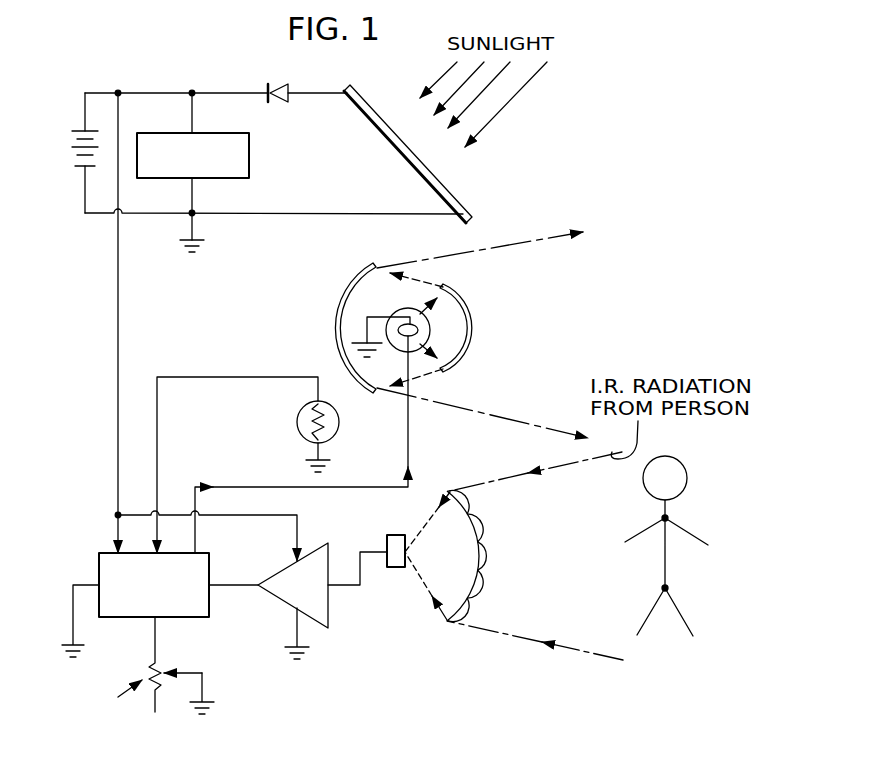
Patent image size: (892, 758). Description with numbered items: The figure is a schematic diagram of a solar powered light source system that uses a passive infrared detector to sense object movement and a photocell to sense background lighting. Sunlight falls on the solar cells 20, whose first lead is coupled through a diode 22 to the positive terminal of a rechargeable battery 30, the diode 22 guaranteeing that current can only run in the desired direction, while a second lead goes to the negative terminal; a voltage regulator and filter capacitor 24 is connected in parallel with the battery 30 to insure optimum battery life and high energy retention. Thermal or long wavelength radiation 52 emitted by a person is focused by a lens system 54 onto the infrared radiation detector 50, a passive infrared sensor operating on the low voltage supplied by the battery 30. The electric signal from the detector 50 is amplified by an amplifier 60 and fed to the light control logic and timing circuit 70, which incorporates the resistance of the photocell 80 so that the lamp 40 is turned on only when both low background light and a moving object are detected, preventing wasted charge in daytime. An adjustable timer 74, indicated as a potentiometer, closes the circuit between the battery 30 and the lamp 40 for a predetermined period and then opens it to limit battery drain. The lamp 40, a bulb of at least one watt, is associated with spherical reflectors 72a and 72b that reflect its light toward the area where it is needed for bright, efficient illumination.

The solar cells 20 is at (462, 203).
The diode 22 is at (289, 99).
The voltage regulator and filter capacitor 24 is at (249, 155).
The rechargeable battery 30 is at (78, 130).
The lamp 40 is at (367, 332).
The infrared radiation detector 50 is at (399, 570).
The thermal or long wavelength radiation 52 is at (503, 480).
The lens system 54 is at (480, 593).
The amplifier 60 is at (332, 557).
The light control logic and timing circuit 70 is at (90, 562).
The spherical reflector 72a is at (356, 268).
The spherical reflector 72b is at (472, 320).
The adjustable timer 74 is at (158, 662).
The photocell 80 is at (297, 414).